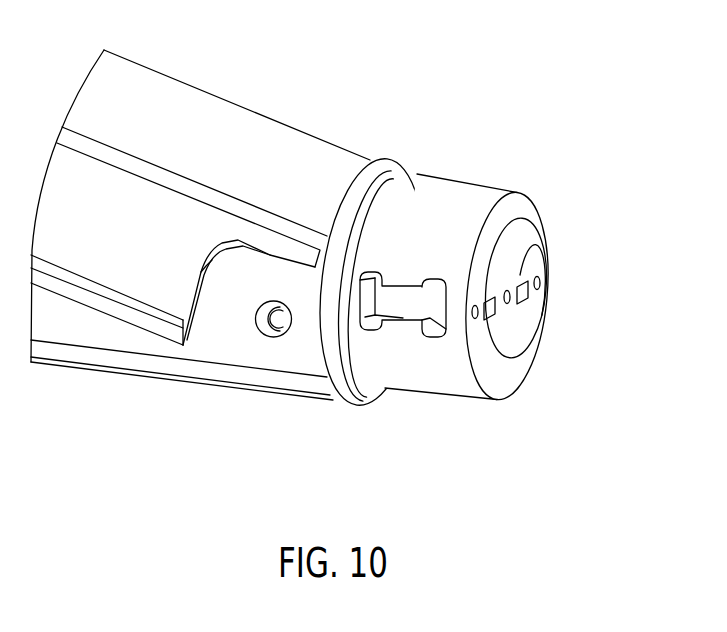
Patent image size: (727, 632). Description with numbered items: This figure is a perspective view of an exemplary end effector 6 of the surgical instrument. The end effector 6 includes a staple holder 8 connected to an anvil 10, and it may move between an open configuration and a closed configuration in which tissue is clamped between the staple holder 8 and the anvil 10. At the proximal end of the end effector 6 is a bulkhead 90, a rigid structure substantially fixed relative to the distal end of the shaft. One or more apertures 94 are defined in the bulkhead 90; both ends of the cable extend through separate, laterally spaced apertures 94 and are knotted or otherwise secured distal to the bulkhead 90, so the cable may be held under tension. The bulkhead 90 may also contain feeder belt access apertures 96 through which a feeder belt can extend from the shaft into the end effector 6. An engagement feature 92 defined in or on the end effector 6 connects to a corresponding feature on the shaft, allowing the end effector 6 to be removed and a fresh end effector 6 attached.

The end effector 6 is at (398, 95).
The staple holder 8 is at (75, 368).
The anvil 10 is at (215, 93).
The bulkhead 90 is at (522, 205).
The engagement feature 92 is at (403, 299).
The apertures 94 is at (537, 322).
The feeder belt access apertures 96 is at (543, 217).